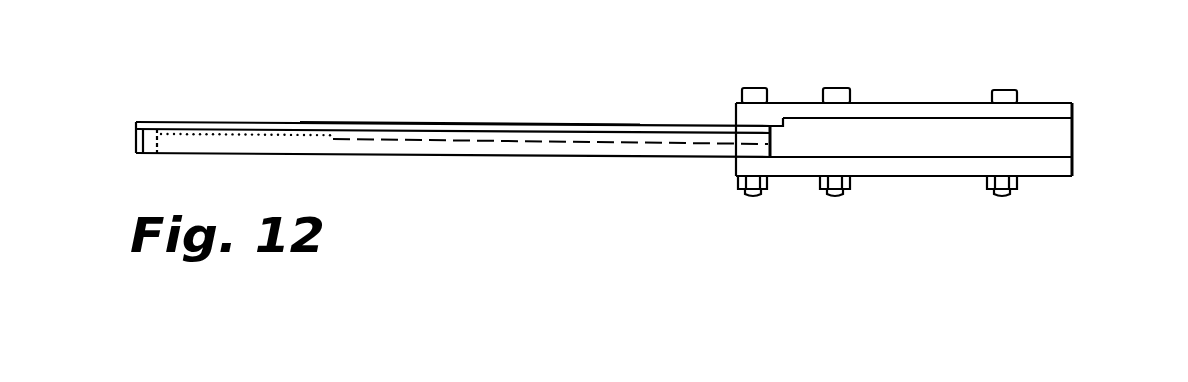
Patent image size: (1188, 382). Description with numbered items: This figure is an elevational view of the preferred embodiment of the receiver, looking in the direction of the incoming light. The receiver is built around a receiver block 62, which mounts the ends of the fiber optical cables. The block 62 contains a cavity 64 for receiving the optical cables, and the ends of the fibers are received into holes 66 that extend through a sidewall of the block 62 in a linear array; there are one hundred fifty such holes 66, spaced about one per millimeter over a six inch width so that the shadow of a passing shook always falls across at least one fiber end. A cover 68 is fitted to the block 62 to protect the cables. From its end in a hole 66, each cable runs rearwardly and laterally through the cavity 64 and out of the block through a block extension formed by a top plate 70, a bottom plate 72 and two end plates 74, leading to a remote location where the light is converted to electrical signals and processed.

The receiver block 62 is at (507, 158).
The cavity 64 is at (449, 140).
The holes 66 is at (200, 132).
The cover 68 is at (568, 123).
The top plate 70 is at (1040, 103).
The bottom plate 72 is at (1052, 165).
The end plates 74 is at (1057, 138).